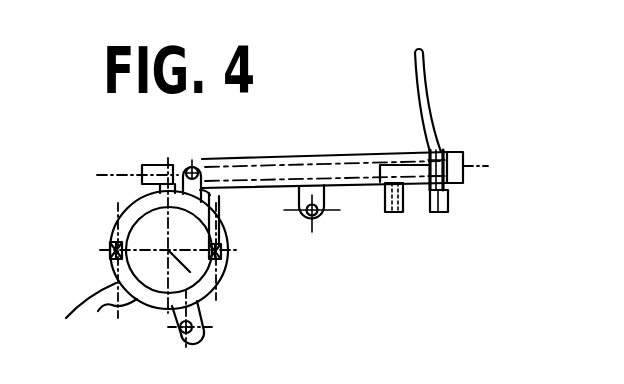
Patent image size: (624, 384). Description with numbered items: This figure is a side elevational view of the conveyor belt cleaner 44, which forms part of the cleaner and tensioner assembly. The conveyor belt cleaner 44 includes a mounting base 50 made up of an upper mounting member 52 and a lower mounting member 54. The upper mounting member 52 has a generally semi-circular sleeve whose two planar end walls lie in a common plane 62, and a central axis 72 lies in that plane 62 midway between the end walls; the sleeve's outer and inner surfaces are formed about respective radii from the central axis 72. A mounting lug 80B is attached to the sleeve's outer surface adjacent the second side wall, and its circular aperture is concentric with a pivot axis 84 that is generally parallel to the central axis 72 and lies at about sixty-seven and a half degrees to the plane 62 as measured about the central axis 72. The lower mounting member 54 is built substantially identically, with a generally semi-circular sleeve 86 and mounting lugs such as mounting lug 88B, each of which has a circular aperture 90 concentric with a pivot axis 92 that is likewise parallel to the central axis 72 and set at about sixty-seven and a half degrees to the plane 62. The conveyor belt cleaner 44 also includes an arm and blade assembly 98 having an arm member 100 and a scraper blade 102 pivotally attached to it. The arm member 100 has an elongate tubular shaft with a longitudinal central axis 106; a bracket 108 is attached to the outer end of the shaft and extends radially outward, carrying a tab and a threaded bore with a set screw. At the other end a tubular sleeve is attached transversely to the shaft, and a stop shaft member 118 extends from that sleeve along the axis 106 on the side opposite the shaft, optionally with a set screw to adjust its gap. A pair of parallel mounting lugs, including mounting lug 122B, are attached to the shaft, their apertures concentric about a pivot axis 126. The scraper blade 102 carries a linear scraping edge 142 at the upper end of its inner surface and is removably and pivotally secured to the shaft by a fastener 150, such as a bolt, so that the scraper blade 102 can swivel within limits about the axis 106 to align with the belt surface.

The conveyor belt cleaner 44 is at (130, 154).
The mounting base 50 is at (109, 270).
The upper mounting member 52 is at (140, 206).
The lower mounting member 54 is at (108, 318).
The common plane 62 is at (110, 250).
The central axis 72 is at (210, 288).
The mounting lug 80B is at (213, 196).
The pivot axis 84 is at (197, 157).
The semi-circular sleeve 86 is at (73, 304).
The mounting lug 88B is at (196, 327).
The circular aperture 90 is at (199, 335).
The pivot axis 92 is at (181, 328).
The arm and blade assembly 98 is at (450, 212).
The arm member 100 is at (302, 157).
The scraper blade 102 is at (440, 96).
The longitudinal central axis 106 is at (495, 163).
The bracket 108 is at (417, 202).
The stop shaft member 118 is at (160, 165).
The mounting lug 122B is at (320, 219).
The pivot axis 126 is at (315, 222).
The scraping edge 142 is at (418, 56).
The fastener 150 is at (464, 173).